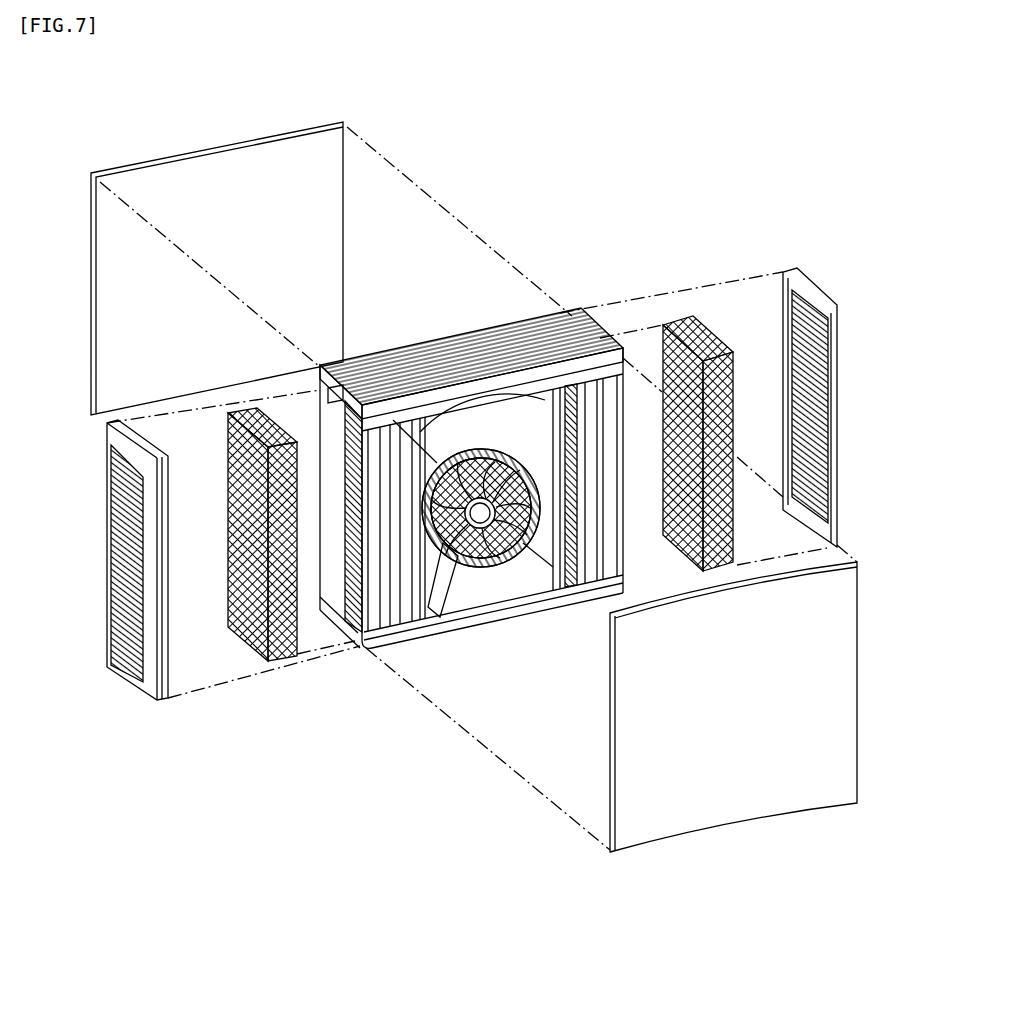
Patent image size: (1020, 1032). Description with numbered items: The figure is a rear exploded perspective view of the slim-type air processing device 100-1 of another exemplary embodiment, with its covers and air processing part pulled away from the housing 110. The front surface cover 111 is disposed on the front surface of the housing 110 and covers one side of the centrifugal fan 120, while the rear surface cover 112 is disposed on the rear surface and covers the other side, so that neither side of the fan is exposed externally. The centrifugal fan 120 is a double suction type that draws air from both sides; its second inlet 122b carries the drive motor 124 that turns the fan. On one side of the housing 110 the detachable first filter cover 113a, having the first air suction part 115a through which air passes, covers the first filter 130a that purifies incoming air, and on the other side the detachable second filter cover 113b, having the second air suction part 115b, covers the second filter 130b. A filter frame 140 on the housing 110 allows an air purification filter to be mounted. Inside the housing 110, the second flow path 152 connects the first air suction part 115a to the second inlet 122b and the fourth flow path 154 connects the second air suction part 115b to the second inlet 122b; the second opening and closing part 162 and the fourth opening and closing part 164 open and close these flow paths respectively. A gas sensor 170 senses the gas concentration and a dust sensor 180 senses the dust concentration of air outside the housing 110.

The slim-type air processing device 100-1 is at (703, 101).
The housing 110 is at (512, 618).
The front surface cover 111 is at (307, 145).
The rear surface cover 112 is at (742, 815).
The first filter cover 113a is at (842, 406).
The second filter cover 113b is at (92, 588).
The first air suction part 115a is at (832, 413).
The second air suction part 115b is at (107, 567).
The centrifugal fan 120 is at (481, 423).
The second inlet 122b is at (523, 447).
The drive motor 124 is at (468, 585).
The first filter 130a is at (694, 318).
The second filter 130b is at (297, 660).
The filter frame 140 is at (350, 646).
The second flow path 152 is at (622, 400).
The fourth flow path 154 is at (395, 642).
The second opening and closing part 162 is at (540, 375).
The fourth opening and closing part 164 is at (463, 385).
The gas sensor 170 is at (565, 305).
The dust sensor 180 is at (335, 367).